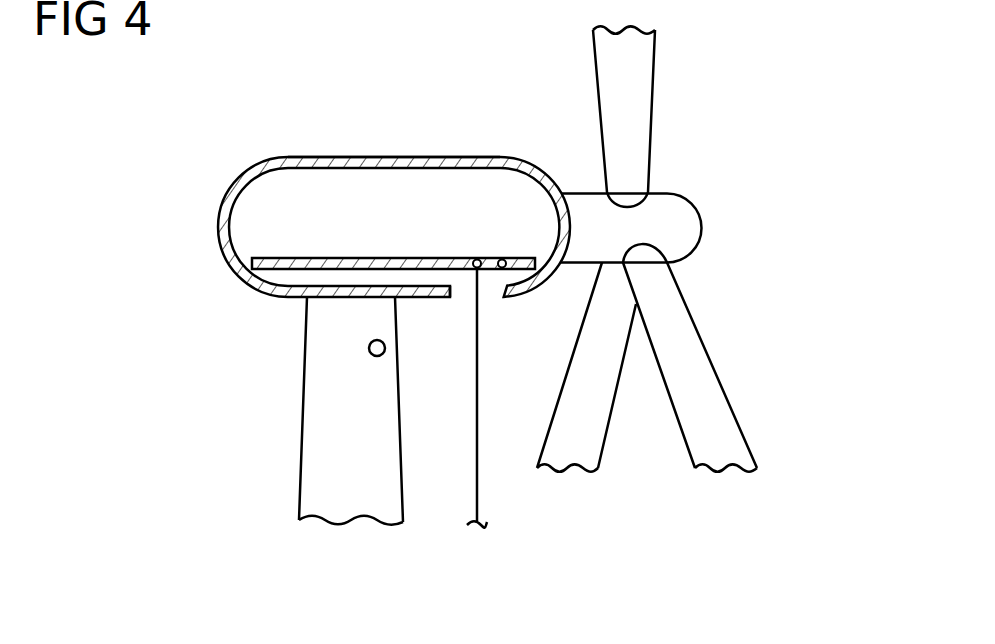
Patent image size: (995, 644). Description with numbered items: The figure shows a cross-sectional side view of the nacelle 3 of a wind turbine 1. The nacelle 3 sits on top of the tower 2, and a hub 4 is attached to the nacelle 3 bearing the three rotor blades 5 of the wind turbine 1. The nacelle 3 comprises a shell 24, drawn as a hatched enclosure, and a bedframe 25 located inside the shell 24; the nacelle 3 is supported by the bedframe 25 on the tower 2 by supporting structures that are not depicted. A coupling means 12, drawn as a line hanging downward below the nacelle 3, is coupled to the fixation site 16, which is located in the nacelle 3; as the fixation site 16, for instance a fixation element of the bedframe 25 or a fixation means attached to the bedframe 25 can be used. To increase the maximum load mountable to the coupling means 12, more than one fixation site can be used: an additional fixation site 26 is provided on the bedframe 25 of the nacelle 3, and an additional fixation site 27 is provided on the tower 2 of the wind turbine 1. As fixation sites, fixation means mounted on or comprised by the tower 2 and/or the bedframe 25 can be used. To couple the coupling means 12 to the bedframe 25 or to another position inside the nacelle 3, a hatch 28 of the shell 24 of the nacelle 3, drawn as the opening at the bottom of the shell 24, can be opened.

The wind turbine 1 is at (858, 40).
The tower 2 is at (300, 453).
The nacelle 3 is at (395, 158).
The hub 4 is at (703, 230).
The rotor blades 5 is at (657, 78).
The coupling means 12 is at (477, 500).
The fixation site 16 is at (477, 259).
The shell 24 is at (318, 158).
The bedframe 25 is at (289, 268).
The additional fixation site 26 is at (503, 259).
The additional fixation site 27 is at (369, 348).
The hatch 28 is at (460, 296).